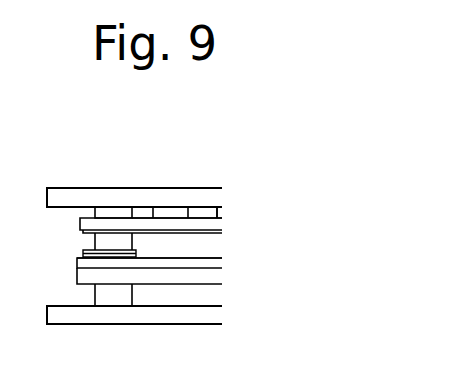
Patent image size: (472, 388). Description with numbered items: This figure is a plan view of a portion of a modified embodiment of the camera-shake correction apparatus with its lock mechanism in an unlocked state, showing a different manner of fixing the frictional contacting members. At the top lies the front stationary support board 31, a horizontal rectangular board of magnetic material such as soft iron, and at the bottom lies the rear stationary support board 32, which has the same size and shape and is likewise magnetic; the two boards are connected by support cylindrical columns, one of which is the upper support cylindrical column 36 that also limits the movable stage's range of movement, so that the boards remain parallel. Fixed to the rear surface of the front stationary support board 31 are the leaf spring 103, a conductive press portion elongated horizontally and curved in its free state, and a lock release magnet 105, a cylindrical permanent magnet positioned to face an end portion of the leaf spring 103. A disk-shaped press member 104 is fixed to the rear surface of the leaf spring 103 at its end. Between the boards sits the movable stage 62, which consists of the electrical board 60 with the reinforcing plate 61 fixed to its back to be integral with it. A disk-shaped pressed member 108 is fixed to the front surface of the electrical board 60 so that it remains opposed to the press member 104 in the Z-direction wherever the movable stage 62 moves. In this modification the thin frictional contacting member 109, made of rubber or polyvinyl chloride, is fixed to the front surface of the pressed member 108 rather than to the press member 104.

The front stationary support board 31 is at (138, 200).
The upper support cylindrical column 36 is at (103, 213).
The lock release magnet 105 is at (163, 212).
The leaf spring 103 is at (215, 223).
The press member 104 is at (80, 228).
The frictional contacting member 109 is at (83, 253).
The pressed member 108 is at (80, 258).
The electrical board 60 is at (225, 263).
The reinforcing plate 61 is at (220, 276).
The movable stage 62 is at (182, 277).
The rear stationary support board 32 is at (210, 315).